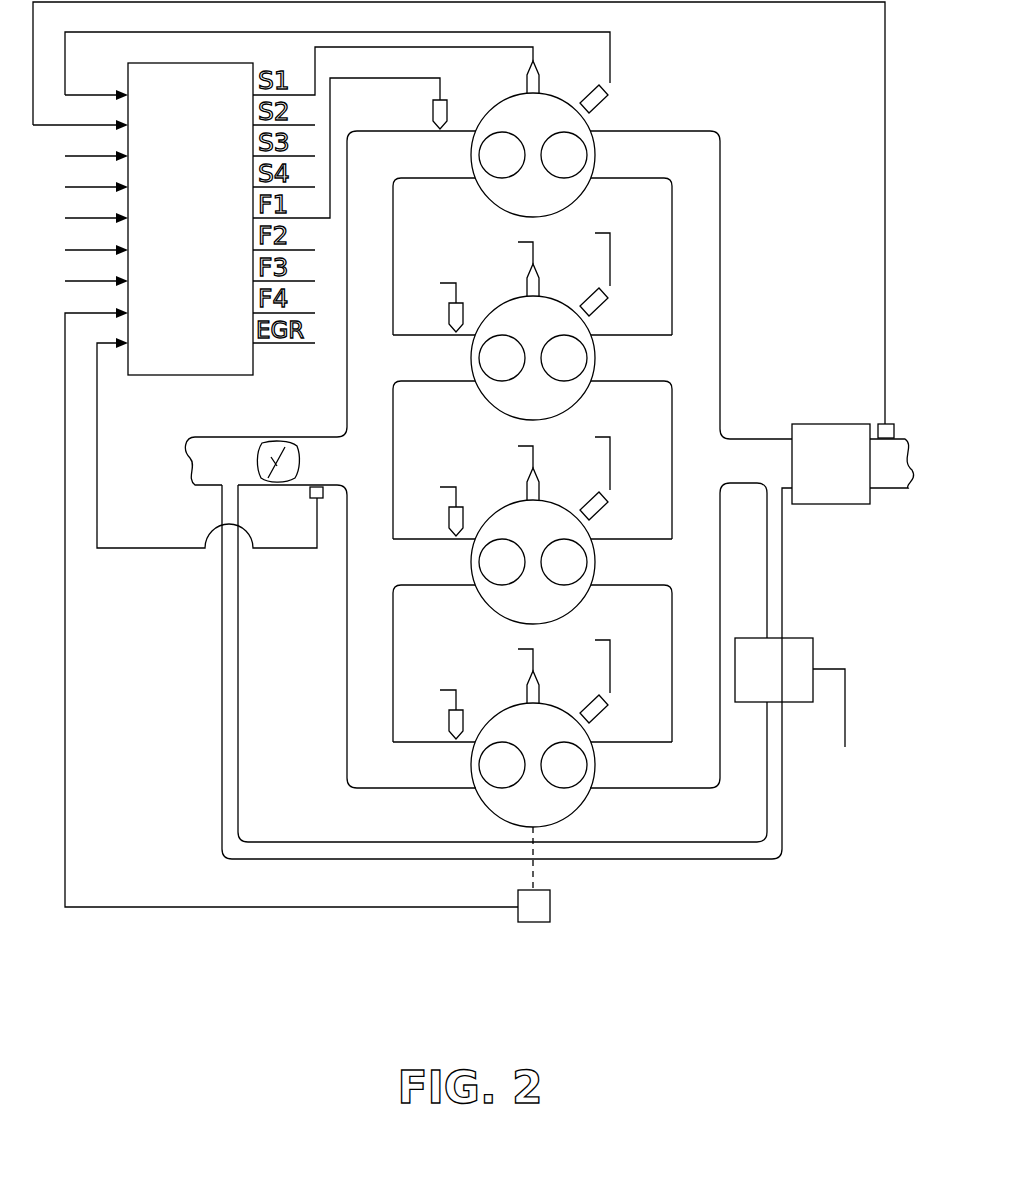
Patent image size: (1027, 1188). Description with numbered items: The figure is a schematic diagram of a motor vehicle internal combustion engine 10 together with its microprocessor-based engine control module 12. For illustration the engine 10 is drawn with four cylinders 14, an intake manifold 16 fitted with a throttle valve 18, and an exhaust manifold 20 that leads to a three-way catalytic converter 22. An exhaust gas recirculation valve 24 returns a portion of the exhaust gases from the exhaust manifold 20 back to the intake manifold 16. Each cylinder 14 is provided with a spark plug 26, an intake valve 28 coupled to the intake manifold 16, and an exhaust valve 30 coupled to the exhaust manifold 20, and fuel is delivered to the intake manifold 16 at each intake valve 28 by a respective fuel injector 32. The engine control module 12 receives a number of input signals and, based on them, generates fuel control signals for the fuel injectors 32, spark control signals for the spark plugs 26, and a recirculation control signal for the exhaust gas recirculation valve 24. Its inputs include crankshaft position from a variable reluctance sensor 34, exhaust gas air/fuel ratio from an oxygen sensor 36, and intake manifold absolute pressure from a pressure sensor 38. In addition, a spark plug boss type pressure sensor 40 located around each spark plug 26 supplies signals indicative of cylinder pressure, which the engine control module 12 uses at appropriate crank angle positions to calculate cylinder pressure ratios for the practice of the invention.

The internal combustion engine 10 is at (764, 116).
The engine control module 12 is at (185, 375).
The cylinder 14 is at (577, 198).
The intake manifold 16 is at (347, 688).
The throttle valve 18 is at (270, 446).
The exhaust manifold 20 is at (704, 219).
The three-way catalytic converter 22 is at (830, 424).
The exhaust gas recirculation valve 24 is at (790, 638).
The spark plug 26 is at (540, 83).
The intake valve 28 is at (497, 132).
The exhaust valve 30 is at (588, 150).
The fuel injector 32 is at (433, 108).
The variable reluctance sensor 34 is at (550, 905).
The oxygen sensor 36 is at (895, 431).
The pressure sensor 38 is at (310, 494).
The cylinder pressure sensor 40 is at (596, 110).